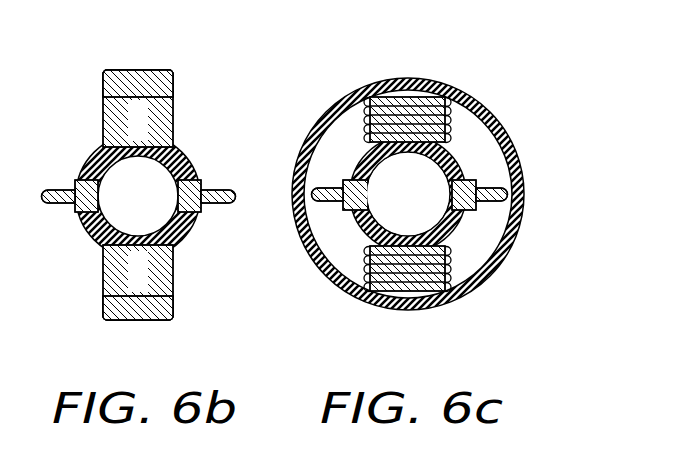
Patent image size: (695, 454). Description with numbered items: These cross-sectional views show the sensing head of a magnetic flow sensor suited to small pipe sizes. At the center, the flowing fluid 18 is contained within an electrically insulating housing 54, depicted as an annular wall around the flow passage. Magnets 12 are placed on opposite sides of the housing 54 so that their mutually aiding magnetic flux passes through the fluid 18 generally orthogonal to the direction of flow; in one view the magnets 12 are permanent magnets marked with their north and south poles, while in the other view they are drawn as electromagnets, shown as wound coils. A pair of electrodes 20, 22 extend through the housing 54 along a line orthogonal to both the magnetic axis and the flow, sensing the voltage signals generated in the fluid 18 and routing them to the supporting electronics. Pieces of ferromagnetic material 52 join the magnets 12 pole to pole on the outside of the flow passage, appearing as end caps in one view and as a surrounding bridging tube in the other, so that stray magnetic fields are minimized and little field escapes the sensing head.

In FIG. 6b, the magnet 12 is at (103, 119).
In FIG. 6c, the magnet 12 is at (352, 97).
In FIG. 6c, the flowing fluid 18 is at (408, 194).
In FIG. 6b, the electrode 20 is at (75, 186).
In FIG. 6c, the electrode 20 is at (338, 190).
In FIG. 6b, the electrode 22 is at (240, 253).
In FIG. 6c, the electrode 22 is at (492, 189).
In FIG. 6b, the pieces of ferromagnetic material 52 is at (103, 84).
In FIG. 6c, the pieces of ferromagnetic material 52 is at (489, 282).
In FIG. 6b, the electrically insulating housing 54 is at (184, 153).
In FIG. 6c, the electrically insulating housing 54 is at (455, 152).